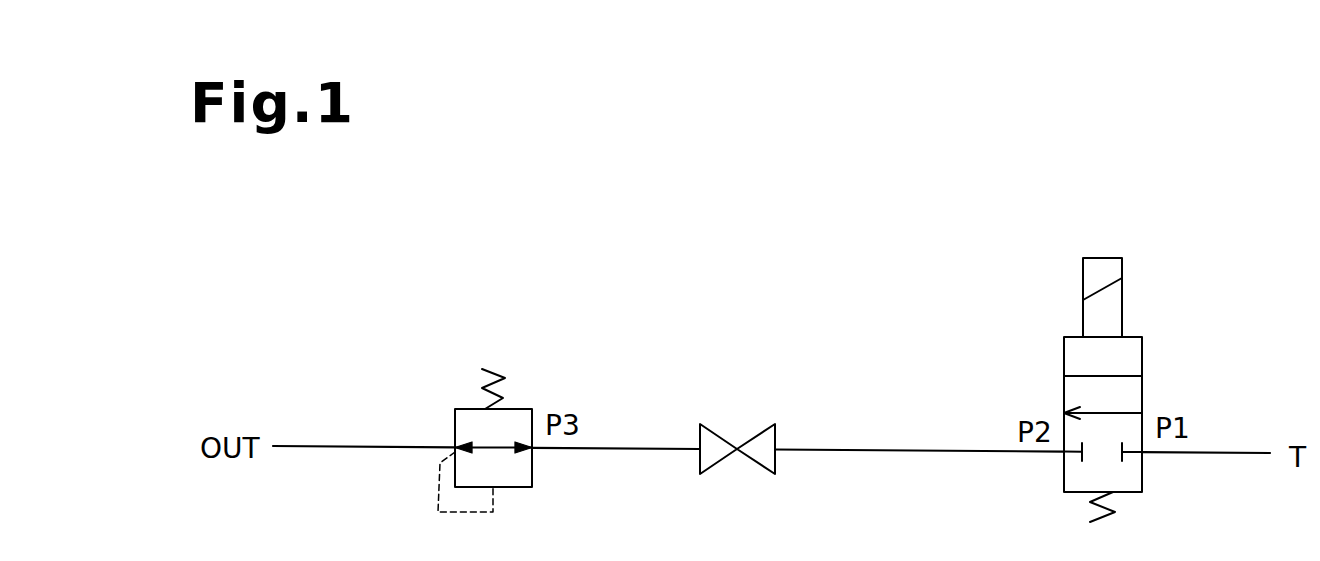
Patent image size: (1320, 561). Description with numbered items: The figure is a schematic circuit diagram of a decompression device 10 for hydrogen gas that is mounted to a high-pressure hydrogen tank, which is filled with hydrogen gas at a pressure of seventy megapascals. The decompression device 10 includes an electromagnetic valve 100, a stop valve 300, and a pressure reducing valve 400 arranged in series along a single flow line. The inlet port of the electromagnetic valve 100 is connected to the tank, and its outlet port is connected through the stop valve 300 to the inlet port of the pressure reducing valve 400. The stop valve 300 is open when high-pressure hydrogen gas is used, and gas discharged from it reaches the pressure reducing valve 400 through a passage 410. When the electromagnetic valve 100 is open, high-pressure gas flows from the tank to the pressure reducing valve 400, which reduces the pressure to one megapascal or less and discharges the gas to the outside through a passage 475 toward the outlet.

The decompression device 10 is at (880, 320).
The electromagnetic valve 100 is at (1142, 358).
The stop valve 300 is at (756, 432).
The pressure reducing valve 400 is at (529, 409).
The passage 410 is at (638, 449).
The passage 475 is at (359, 446).